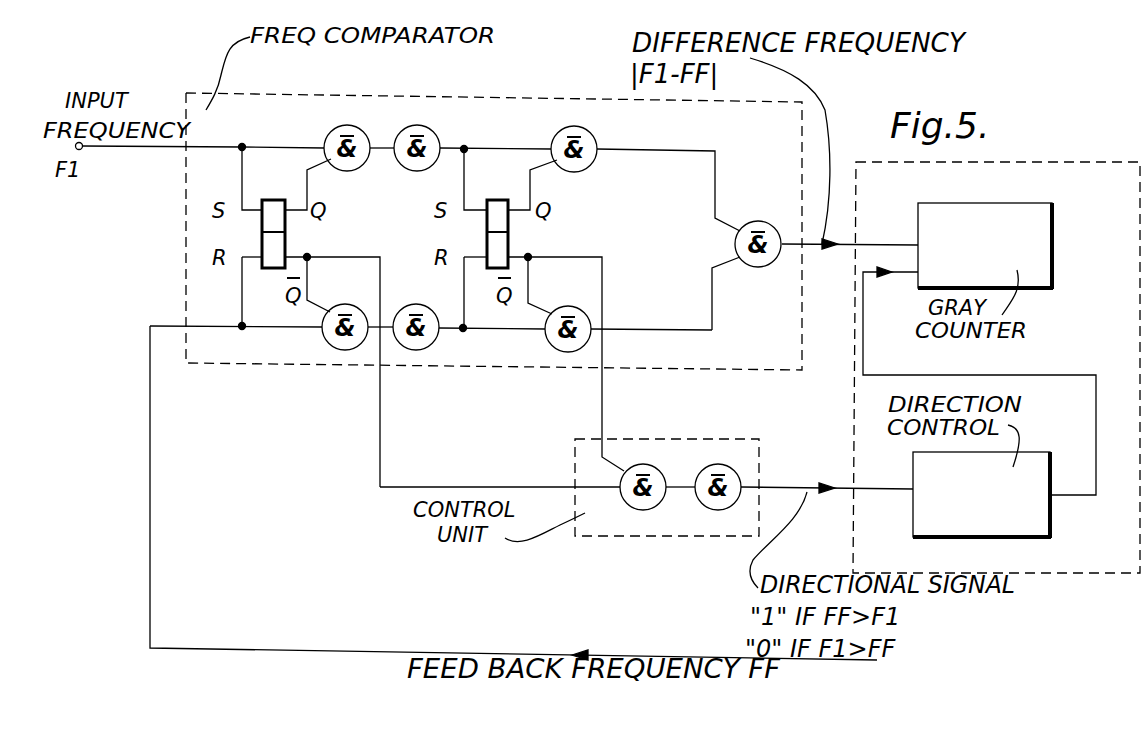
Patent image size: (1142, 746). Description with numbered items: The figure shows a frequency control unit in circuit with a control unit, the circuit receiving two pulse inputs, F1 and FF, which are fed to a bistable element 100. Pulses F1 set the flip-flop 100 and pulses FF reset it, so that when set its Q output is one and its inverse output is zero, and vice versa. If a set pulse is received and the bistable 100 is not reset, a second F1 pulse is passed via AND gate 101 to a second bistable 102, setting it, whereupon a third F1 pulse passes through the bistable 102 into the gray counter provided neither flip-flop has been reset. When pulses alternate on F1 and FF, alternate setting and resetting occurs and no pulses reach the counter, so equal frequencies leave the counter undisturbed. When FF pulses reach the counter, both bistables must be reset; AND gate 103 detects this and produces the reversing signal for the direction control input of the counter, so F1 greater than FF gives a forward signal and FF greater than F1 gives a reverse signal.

The bistable element 100 is at (293, 184).
The AND gate 101 is at (440, 113).
The second bistable 102 is at (512, 184).
The AND gate 103 is at (732, 516).